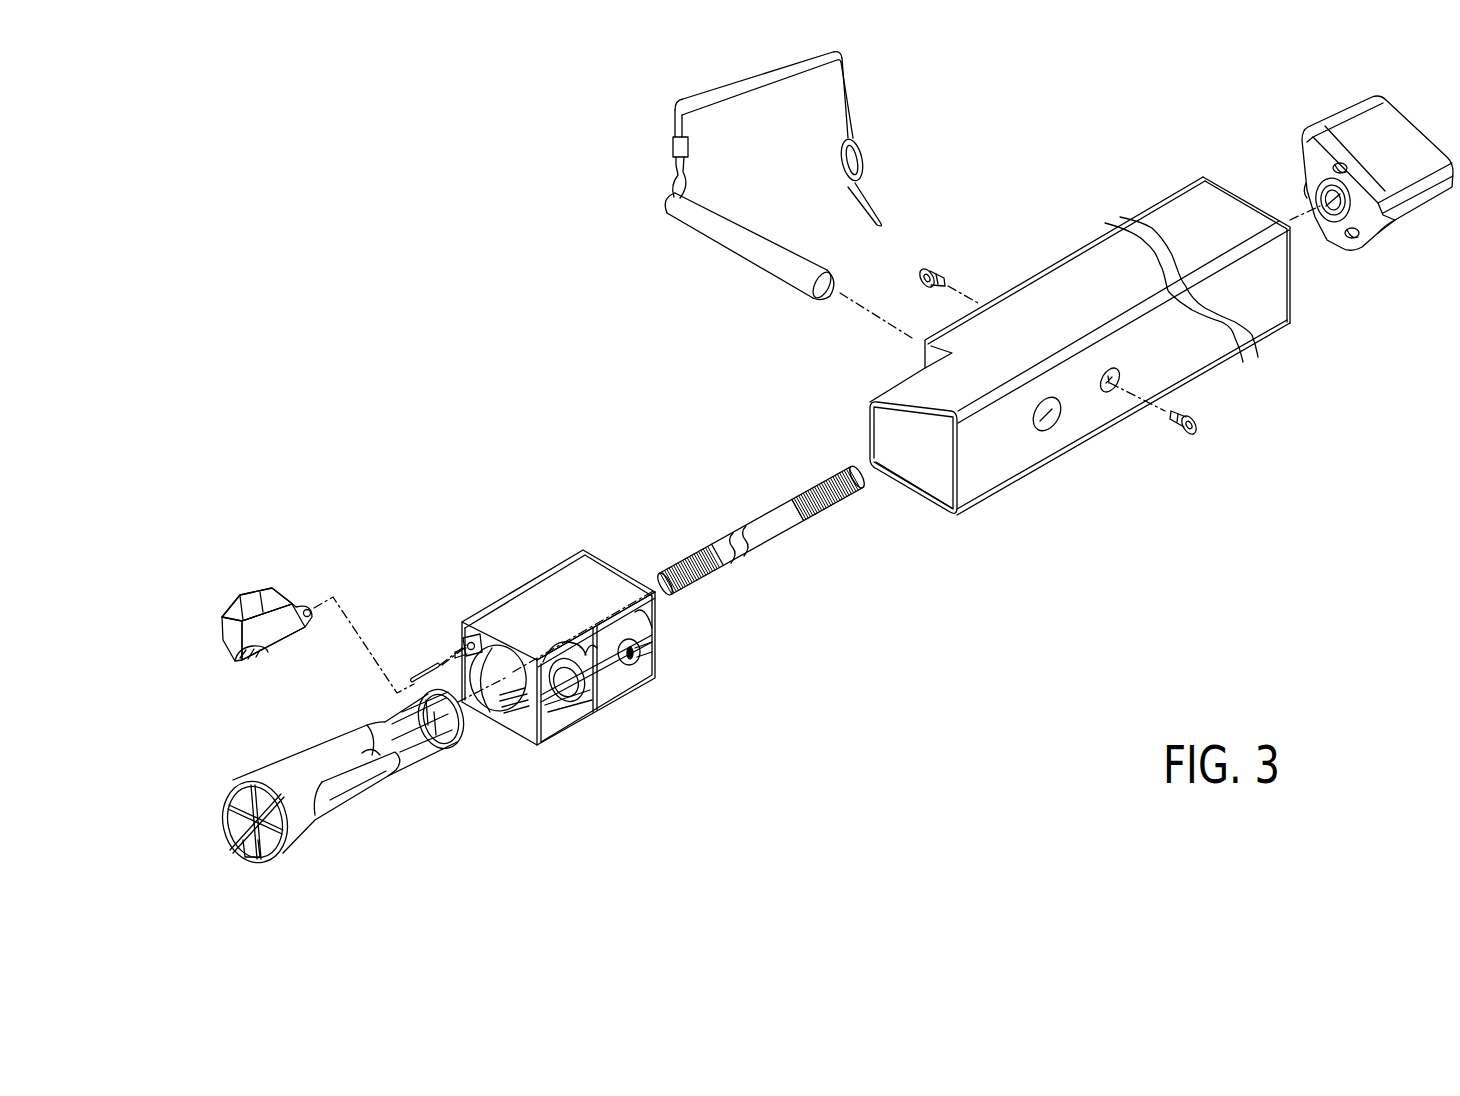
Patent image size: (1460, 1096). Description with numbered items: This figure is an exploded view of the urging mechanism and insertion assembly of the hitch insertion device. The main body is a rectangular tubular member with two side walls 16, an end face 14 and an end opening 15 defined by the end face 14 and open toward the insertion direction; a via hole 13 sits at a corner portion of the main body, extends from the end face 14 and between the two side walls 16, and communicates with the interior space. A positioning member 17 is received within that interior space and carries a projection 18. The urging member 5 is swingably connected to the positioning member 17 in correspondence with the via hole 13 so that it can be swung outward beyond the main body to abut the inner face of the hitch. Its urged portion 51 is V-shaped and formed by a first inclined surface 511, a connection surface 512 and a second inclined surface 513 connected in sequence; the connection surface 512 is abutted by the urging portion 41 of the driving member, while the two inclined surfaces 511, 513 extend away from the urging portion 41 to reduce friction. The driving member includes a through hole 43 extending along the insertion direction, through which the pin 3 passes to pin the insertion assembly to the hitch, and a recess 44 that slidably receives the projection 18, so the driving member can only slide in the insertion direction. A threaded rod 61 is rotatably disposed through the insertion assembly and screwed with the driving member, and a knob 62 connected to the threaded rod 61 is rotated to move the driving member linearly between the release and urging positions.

The pin 3 is at (722, 228).
The urging member 5 is at (276, 583).
The via hole 13 is at (878, 364).
The end face 14 is at (872, 412).
The end opening 15 is at (933, 472).
The side wall 16 is at (1100, 257).
The positioning member 17 is at (540, 588).
The projection 18 is at (498, 705).
The urging portion 41 is at (293, 828).
The through hole 43 is at (362, 794).
The recess 44 is at (254, 860).
The urged portion 51 is at (198, 659).
The first inclined surface 511 is at (233, 660).
The connection surface 512 is at (263, 660).
The second inclined surface 513 is at (262, 670).
The threaded rod 61 is at (767, 528).
The knob 62 is at (1413, 198).